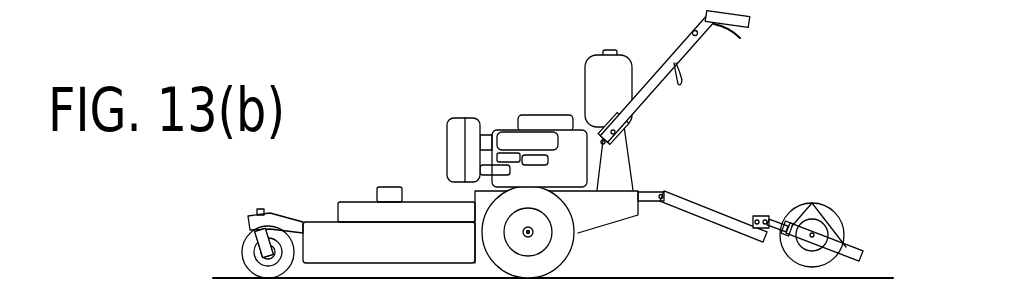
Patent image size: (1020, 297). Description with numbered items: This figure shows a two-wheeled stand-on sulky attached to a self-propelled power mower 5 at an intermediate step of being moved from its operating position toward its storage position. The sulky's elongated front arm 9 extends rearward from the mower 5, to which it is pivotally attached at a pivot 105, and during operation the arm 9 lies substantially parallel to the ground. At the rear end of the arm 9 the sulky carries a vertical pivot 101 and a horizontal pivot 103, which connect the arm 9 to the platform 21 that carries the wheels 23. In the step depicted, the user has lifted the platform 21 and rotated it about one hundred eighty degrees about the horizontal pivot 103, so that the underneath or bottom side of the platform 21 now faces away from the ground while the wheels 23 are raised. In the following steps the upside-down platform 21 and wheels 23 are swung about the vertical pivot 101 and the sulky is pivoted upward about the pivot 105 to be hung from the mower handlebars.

The power mower 5 is at (418, 120).
The front arm 9 is at (710, 216).
The platform 21 is at (853, 245).
The wheels 23 is at (825, 212).
The vertical pivot 101 is at (760, 214).
The horizontal pivot 103 is at (791, 218).
The pivot 105 is at (662, 178).